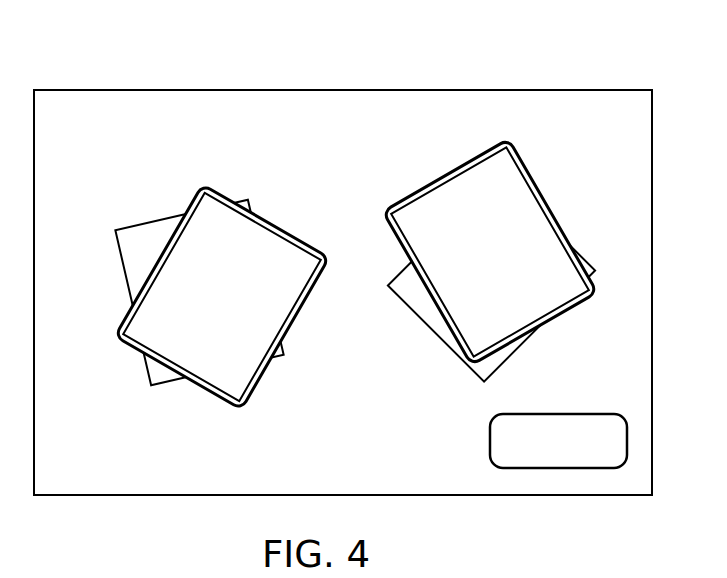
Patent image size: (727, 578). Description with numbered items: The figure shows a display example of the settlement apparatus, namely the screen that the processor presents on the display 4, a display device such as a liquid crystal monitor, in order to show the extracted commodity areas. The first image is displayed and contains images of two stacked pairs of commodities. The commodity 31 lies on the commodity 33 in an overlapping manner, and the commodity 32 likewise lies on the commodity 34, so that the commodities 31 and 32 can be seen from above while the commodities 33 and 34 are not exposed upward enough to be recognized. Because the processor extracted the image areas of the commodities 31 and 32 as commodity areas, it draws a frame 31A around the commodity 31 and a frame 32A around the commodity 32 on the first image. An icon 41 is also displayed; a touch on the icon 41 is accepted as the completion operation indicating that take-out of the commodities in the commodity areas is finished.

The display 4 is at (597, 90).
The commodity 31 is at (280, 238).
The frame 31A is at (252, 211).
The commodity 32 is at (527, 173).
The frame 32A is at (448, 168).
The commodity 33 is at (150, 377).
The commodity 34 is at (432, 330).
The icon 41 is at (562, 414).